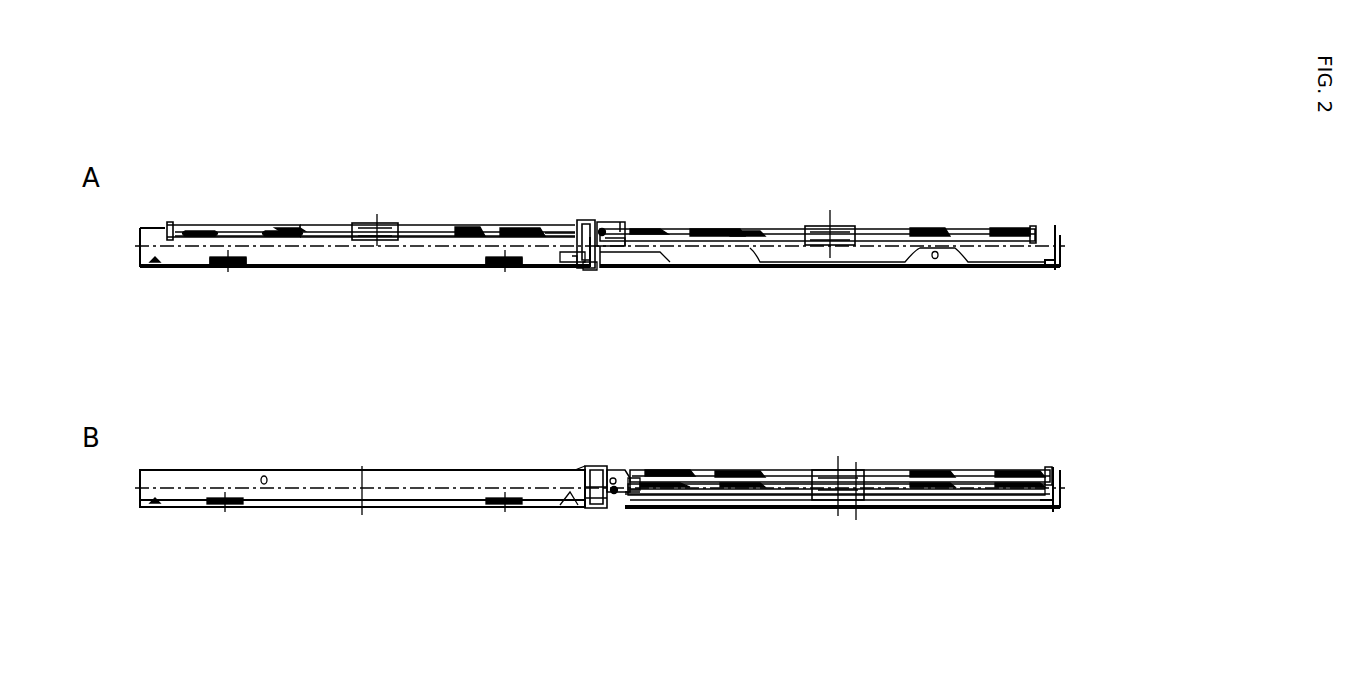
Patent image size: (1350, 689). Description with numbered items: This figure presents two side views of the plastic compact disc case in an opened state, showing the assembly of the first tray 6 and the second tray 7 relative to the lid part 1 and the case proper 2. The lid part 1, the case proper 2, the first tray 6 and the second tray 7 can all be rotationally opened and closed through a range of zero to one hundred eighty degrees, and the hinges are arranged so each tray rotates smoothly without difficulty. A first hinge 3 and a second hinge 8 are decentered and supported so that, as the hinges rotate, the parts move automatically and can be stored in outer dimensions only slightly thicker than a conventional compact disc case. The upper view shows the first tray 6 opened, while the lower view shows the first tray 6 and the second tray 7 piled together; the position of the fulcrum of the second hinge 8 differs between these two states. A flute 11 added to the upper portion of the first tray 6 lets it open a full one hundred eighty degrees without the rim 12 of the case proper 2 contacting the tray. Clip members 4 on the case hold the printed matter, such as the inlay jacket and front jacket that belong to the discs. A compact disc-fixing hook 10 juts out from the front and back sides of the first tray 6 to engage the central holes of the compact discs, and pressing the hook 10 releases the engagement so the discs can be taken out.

The lid part 1 is at (370, 268).
The case proper 2 is at (885, 266).
The first hinge 3 is at (600, 268).
The clip members 4 is at (238, 266).
The first tray 6 is at (430, 226).
The second tray 7 is at (888, 232).
The second hinge 8 is at (605, 224).
The compact disc-fixing hook 10 is at (385, 226).
The flute 11 is at (580, 258).
The rim 12 is at (590, 272).